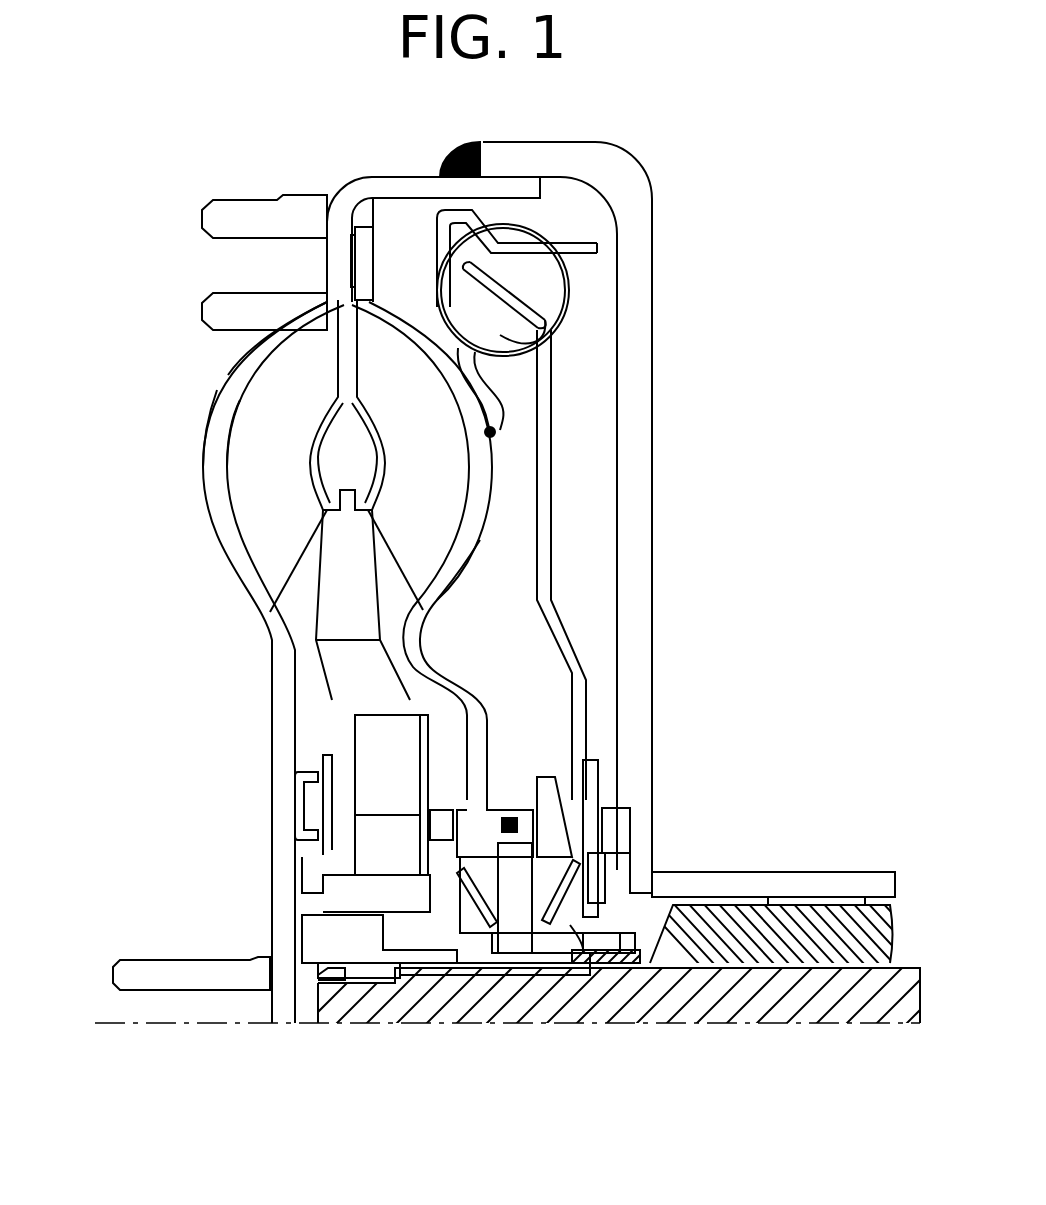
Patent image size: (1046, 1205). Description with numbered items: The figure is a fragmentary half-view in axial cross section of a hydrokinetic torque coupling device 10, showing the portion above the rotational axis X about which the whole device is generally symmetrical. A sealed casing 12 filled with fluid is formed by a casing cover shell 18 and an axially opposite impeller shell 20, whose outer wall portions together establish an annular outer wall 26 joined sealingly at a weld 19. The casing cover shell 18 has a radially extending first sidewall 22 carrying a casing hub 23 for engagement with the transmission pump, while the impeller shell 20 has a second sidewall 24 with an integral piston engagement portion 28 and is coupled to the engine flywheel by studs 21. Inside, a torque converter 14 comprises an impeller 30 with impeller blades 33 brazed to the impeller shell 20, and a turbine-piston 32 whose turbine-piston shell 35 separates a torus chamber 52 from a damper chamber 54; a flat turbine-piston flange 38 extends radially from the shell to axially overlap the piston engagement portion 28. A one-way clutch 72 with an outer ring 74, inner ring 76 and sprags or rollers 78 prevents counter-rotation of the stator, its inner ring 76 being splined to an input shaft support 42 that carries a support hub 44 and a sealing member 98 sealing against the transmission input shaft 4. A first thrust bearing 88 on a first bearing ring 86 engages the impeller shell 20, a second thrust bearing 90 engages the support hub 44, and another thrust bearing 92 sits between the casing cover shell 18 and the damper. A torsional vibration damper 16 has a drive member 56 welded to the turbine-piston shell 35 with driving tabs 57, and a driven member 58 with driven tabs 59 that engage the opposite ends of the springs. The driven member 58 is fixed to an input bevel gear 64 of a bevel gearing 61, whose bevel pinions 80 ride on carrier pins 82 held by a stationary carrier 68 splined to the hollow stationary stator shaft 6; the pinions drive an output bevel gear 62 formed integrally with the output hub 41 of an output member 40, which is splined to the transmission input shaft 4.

The transmission input shaft 4 is at (752, 995).
The stationary stator shaft 6 is at (805, 950).
The hydrokinetic torque coupling device 10 is at (695, 208).
The sealed casing 12 is at (630, 160).
The torque converter 14 is at (212, 418).
The torsional vibration damper 16 is at (568, 322).
The casing cover shell 18 is at (655, 490).
The weld 19 is at (450, 156).
The impeller shell 20 is at (208, 518).
The studs 21 is at (248, 205).
The first sidewall 22 is at (640, 388).
The casing hub 23 is at (868, 878).
The second sidewall 24 is at (243, 356).
The annular outer wall 26 is at (547, 146).
The piston engagement portion 28 is at (350, 262).
The impeller 30 is at (205, 465).
The turbine-piston 32 is at (462, 520).
The impeller blades 33 is at (335, 440).
The turbine-piston shell 35 is at (442, 606).
The turbine-piston flange 38 is at (364, 228).
The output member 40 is at (475, 955).
The output hub 41 is at (430, 968).
The input shaft support 42 is at (335, 938).
The support hub 44 is at (487, 805).
The torus chamber 52 is at (347, 405).
The damper chamber 54 is at (503, 573).
The drive member 56 is at (498, 415).
The driving tabs 57 is at (520, 240).
The driven member 58 is at (556, 618).
The driven tabs 59 is at (495, 300).
The bevel gearing 61 is at (575, 830).
The output bevel gear 62 is at (522, 955).
The input bevel gear 64 is at (628, 963).
The carrier 68 is at (660, 960).
The one-way clutch 72 is at (352, 745).
The outer ring 74 is at (387, 765).
The inner ring 76 is at (335, 888).
The sprags or rollers 78 is at (387, 845).
The bevel pinions 80 is at (620, 905).
The carrier pins 82 is at (580, 955).
The first bearing ring 86 is at (320, 773).
The first thrust bearing 88 is at (308, 805).
The second thrust bearing 90 is at (442, 812).
The thrust bearing 92 is at (618, 828).
The sealing member 98 is at (318, 982).
The rotational axis X is at (100, 1023).